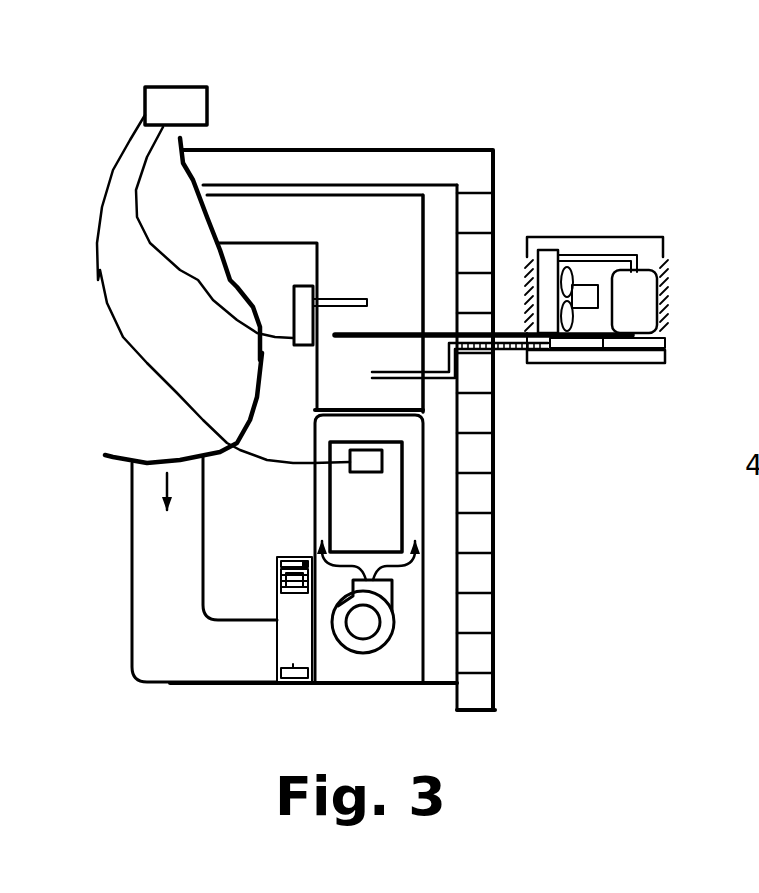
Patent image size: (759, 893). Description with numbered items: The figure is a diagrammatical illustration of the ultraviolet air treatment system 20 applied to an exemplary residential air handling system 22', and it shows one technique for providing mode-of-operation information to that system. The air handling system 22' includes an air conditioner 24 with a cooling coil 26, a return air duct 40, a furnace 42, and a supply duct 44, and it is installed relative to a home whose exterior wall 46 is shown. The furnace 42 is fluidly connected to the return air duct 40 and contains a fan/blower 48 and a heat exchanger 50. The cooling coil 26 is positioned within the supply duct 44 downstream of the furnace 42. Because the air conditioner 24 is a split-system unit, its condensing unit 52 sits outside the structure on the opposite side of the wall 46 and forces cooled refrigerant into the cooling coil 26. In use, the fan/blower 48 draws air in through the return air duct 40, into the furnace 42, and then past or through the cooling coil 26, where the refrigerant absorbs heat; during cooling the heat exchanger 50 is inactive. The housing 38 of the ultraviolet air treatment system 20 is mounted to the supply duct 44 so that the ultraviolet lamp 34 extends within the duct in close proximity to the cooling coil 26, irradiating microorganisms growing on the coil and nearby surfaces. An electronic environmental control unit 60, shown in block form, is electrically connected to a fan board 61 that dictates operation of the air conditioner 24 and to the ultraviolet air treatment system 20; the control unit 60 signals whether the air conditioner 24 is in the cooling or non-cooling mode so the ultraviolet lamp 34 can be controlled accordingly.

The ultraviolet air treatment system 20 is at (289, 343).
The air handling system 22' is at (526, 447).
The air conditioner 24 is at (661, 231).
The cooling coil 26 is at (441, 393).
The ultraviolet lamp 34 is at (334, 299).
The housing 38 is at (297, 348).
The return air duct 40 is at (129, 537).
The furnace 42 is at (430, 505).
The supply duct 44 is at (430, 217).
The exterior wall 46 is at (498, 213).
The fan/blower 48 is at (365, 655).
The heat exchanger 50 is at (371, 495).
The condensing unit 52 is at (664, 250).
The electronic environmental control unit 60 is at (172, 85).
The fan board 61 is at (360, 450).